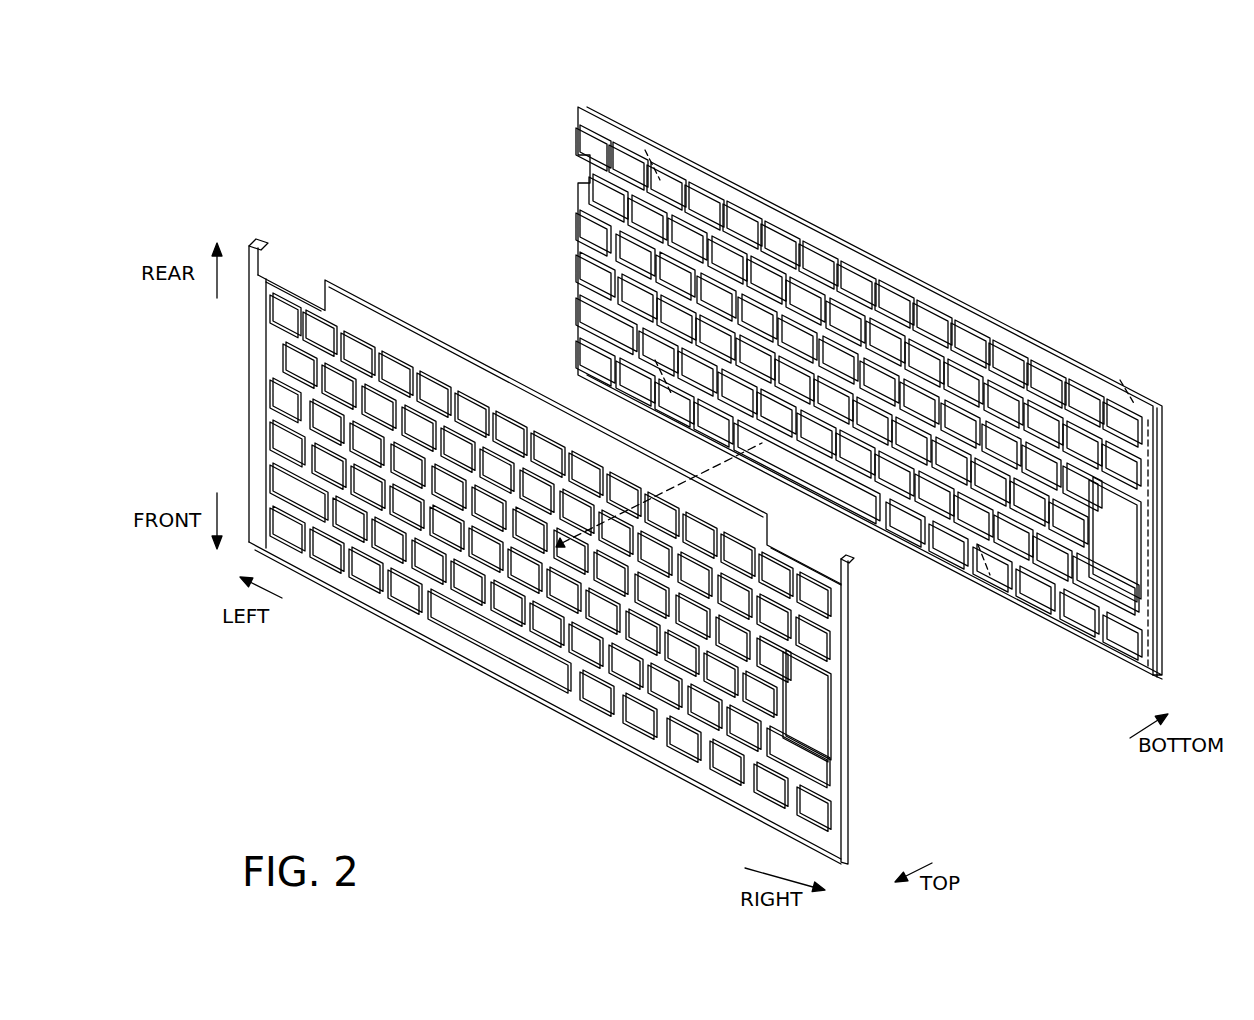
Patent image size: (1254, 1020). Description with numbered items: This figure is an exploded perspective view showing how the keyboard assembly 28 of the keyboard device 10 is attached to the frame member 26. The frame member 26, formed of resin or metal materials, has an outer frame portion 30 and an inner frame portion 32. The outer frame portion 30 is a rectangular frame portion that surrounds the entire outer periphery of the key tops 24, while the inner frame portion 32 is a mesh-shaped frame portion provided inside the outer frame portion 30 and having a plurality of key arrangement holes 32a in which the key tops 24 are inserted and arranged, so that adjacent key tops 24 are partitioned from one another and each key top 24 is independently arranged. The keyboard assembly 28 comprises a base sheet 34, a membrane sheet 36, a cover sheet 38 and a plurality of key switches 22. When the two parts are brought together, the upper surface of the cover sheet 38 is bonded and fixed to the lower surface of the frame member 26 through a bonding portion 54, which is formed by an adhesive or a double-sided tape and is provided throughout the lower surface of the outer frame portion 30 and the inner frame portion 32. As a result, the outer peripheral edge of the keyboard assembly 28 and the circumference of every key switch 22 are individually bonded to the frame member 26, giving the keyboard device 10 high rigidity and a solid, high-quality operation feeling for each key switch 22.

The keyboard device 10 is at (233, 164).
The key switch 22 is at (1012, 352).
The key top 24 is at (718, 290).
The frame member 26 is at (239, 386).
The keyboard assembly 28 is at (569, 205).
The outer frame portion 30 is at (848, 677).
The inner frame portion 32 is at (437, 422).
The key arrangement hole 32a is at (403, 508).
The base sheet 34 is at (1158, 541).
The membrane sheet 36 is at (1158, 581).
The cover sheet 38 is at (1156, 482).
The bonding portion 54 is at (645, 144).